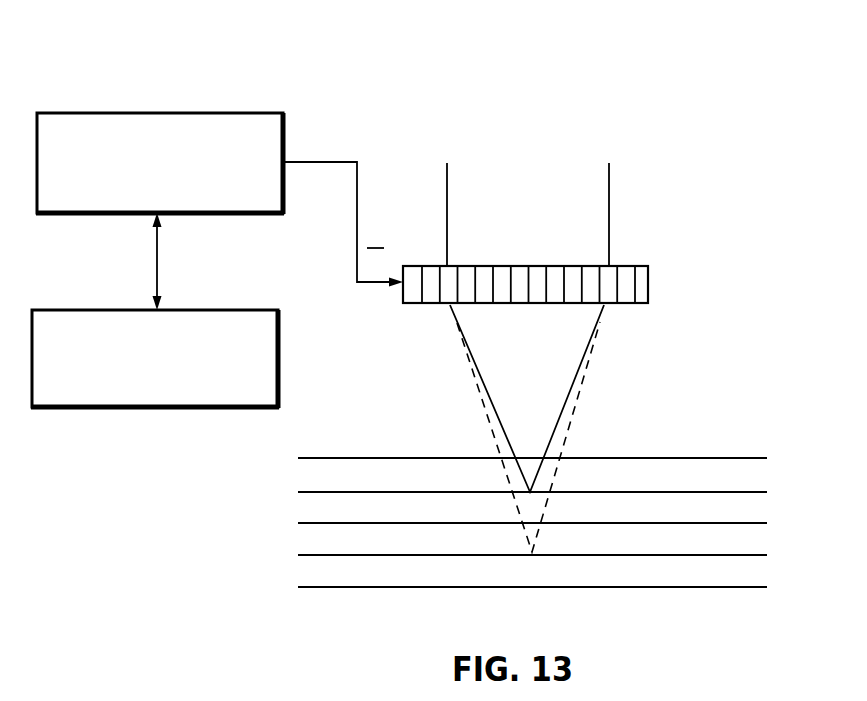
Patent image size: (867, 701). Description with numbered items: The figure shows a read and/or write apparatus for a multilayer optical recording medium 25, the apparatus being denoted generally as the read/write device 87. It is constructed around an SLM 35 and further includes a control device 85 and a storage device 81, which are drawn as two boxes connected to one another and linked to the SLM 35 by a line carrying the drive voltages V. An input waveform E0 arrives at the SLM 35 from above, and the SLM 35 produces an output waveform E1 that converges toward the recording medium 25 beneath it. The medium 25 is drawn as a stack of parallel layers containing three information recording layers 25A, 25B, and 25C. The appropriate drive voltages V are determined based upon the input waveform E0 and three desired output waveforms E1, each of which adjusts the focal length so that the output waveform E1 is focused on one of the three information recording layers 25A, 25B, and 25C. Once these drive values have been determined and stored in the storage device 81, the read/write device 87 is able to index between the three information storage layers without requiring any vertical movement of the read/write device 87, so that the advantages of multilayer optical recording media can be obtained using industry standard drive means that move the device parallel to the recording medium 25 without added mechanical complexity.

The read/write device 87 is at (360, 51).
The control device 85 is at (160, 141).
The storage device 81 is at (155, 336).
The SLM 35 is at (560, 271).
The input waveform E0 is at (630, 181).
The output waveform E1 is at (632, 350).
The multilayer optical recording medium 25 is at (663, 430).
The information recording layer 25A is at (559, 494).
The information recording layer 25B is at (559, 524).
The information recording layer 25C is at (559, 556).